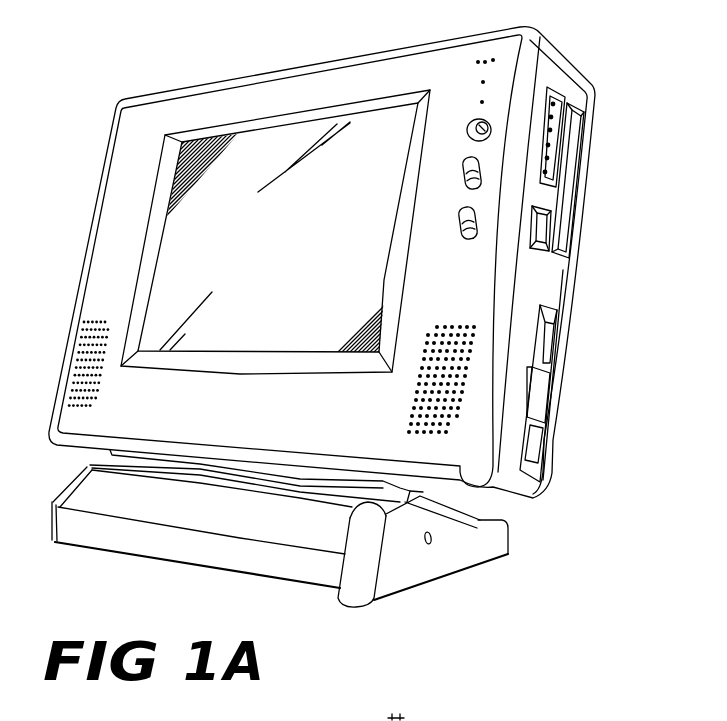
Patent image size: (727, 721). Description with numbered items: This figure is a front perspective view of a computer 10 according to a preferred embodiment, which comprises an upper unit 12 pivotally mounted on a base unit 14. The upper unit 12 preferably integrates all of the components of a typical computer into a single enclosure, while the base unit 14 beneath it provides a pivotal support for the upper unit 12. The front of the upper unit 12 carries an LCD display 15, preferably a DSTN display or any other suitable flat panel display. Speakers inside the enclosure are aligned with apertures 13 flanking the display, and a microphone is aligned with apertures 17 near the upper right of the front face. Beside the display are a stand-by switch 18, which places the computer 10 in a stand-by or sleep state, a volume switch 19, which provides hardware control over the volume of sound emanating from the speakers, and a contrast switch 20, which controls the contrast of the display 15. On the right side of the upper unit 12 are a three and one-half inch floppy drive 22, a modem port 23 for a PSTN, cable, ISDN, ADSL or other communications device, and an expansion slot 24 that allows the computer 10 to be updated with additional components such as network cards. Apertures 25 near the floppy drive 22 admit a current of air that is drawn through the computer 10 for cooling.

The computer 10 is at (150, 52).
The upper unit 12 is at (80, 289).
The apertures 13 is at (74, 359).
The base unit 14 is at (441, 561).
The LCD display 15 is at (291, 277).
The apertures 17 is at (478, 57).
The stand-by switch 18 is at (468, 123).
The volume switch 19 is at (464, 170).
The contrast switch 20 is at (458, 221).
The 3.5 inch floppy drive 22 is at (540, 376).
The modem port 23 is at (538, 246).
The expansion slot 24 is at (562, 202).
The apertures 25 is at (556, 97).